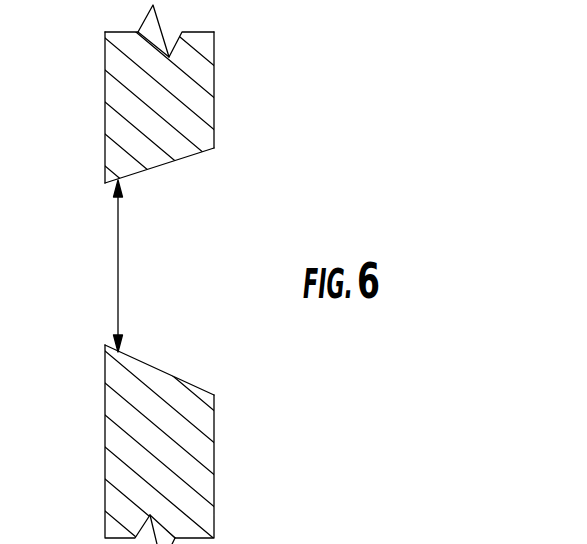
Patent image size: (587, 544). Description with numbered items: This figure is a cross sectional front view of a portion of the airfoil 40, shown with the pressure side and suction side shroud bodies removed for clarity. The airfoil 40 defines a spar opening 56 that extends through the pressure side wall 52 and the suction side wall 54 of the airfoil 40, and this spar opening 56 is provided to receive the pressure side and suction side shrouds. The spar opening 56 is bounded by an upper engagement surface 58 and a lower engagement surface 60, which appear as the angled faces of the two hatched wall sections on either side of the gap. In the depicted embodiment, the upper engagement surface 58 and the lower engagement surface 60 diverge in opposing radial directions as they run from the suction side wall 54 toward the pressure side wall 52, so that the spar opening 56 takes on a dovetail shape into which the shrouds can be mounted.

The airfoil 40 is at (190, 97).
The pressure side wall 52 is at (214, 138).
The suction side wall 54 is at (105, 112).
The spar opening 56 is at (118, 270).
The upper engagement surface 58 is at (160, 167).
The lower engagement surface 60 is at (165, 372).